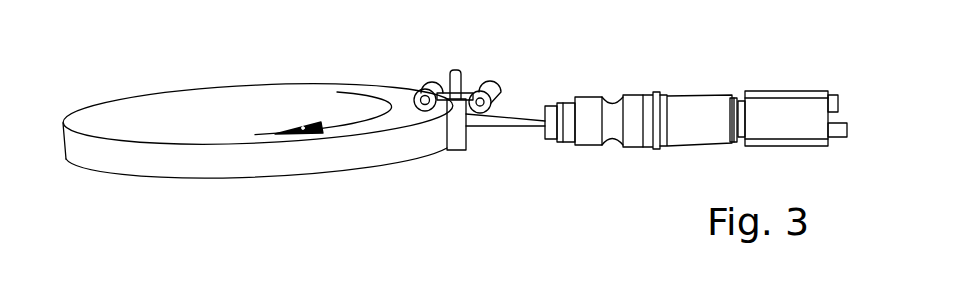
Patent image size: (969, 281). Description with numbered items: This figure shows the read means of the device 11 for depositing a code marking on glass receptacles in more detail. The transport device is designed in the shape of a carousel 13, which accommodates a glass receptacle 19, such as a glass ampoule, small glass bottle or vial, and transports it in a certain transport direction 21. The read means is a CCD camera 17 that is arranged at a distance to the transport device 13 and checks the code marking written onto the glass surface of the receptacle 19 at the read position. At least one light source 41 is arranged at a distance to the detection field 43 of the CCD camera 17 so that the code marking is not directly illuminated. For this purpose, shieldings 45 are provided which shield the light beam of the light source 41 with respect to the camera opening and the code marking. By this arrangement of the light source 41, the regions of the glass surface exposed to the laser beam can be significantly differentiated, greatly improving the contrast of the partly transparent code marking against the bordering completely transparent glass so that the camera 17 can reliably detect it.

The device for depositing a code marking 11 is at (378, 42).
The carousel 13 is at (222, 88).
The transport direction 21 is at (375, 118).
The glass receptacle 19 is at (472, 148).
The light source 41 is at (433, 90).
The shieldings 45 is at (417, 95).
The detection field 43 is at (502, 115).
The CCD camera 17 is at (672, 97).